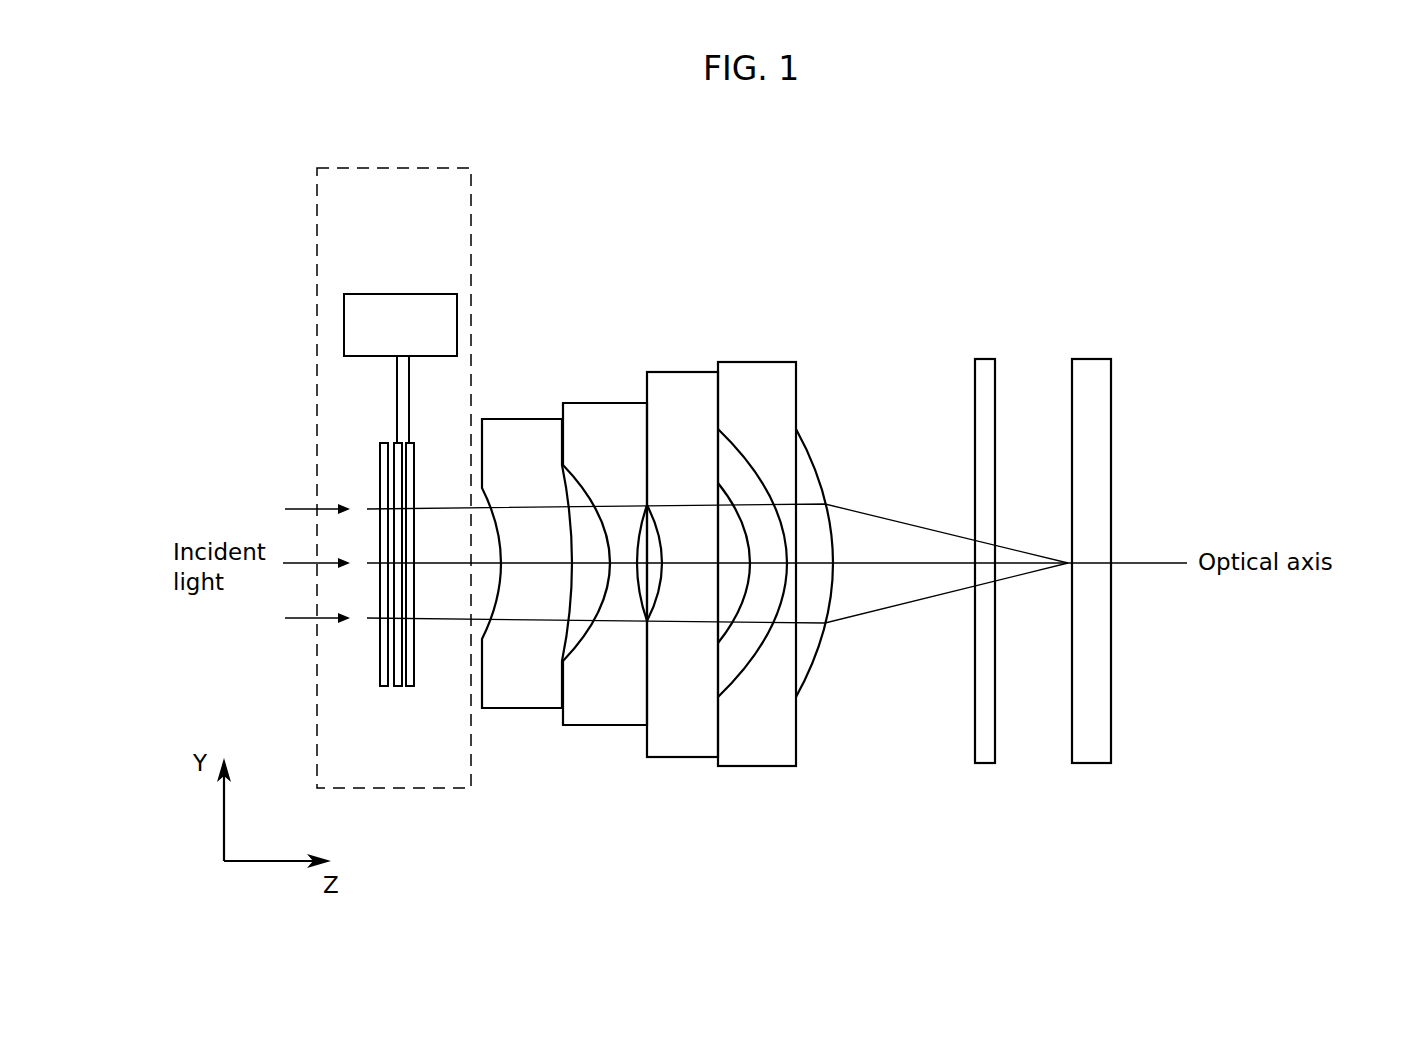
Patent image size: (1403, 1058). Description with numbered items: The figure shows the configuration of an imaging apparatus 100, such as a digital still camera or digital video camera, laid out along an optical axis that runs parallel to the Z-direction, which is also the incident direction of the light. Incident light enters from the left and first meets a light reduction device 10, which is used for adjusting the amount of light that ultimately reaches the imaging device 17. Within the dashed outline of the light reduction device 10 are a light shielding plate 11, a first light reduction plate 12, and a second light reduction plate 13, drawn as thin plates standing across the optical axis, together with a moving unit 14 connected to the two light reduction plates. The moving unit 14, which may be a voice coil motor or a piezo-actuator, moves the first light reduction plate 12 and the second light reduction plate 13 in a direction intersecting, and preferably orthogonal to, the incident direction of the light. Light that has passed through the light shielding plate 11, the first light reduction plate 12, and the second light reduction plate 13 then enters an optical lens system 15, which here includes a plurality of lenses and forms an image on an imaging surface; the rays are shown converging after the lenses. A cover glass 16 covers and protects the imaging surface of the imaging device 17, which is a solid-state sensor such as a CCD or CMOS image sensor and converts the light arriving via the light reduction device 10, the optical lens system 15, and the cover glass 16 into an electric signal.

The imaging apparatus 100 is at (768, 258).
The light reduction device 10 is at (359, 168).
The light shielding plate 11 is at (383, 686).
The first light reduction plate 12 is at (397, 686).
The second light reduction plate 13 is at (409, 686).
The moving unit 14 is at (397, 294).
The optical lens system 15 is at (805, 766).
The cover glass 16 is at (985, 763).
The imaging device 17 is at (1092, 763).